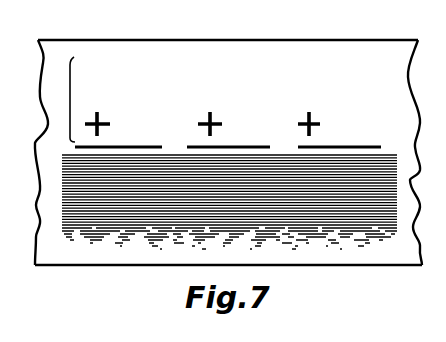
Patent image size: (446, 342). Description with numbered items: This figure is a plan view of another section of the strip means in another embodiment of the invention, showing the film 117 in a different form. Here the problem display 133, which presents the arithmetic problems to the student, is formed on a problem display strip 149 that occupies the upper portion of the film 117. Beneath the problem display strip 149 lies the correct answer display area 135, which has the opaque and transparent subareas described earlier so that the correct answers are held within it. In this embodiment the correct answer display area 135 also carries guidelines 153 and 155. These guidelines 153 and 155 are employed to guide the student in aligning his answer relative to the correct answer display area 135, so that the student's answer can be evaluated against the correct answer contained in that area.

The film 117 is at (340, 265).
The problem display 133 is at (69, 96).
The correct answer display area 135 is at (125, 234).
The problem display strip 149 is at (318, 62).
The guideline 153 is at (163, 217).
The guideline 155 is at (135, 167).